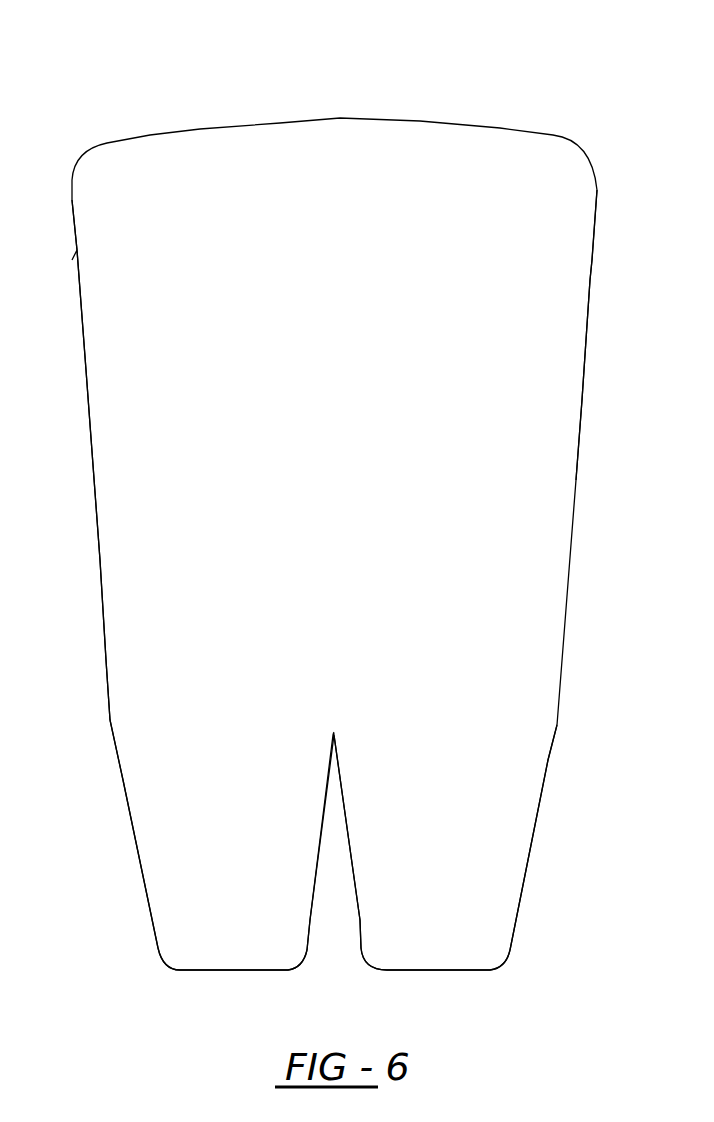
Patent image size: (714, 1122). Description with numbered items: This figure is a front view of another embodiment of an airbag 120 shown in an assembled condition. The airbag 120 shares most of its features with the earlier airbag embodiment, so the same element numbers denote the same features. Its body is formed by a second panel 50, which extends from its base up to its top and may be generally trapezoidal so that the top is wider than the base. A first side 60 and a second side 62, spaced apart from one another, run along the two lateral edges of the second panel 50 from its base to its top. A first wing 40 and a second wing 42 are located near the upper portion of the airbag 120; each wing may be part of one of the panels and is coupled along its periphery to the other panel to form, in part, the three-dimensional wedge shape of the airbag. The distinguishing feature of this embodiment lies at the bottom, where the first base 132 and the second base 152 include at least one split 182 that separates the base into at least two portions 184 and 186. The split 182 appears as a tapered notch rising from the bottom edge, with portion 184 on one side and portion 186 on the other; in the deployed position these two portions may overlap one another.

The airbag 120 is at (234, 88).
The first wing 40 is at (82, 330).
The second wing 42 is at (583, 365).
The second panel 50 is at (222, 602).
The first side 60 is at (128, 806).
The second side 62 is at (535, 825).
The second base 152 is at (253, 972).
The first base 132 is at (418, 972).
The split 182 is at (334, 895).
The portion 184 is at (230, 843).
The portion 186 is at (483, 875).